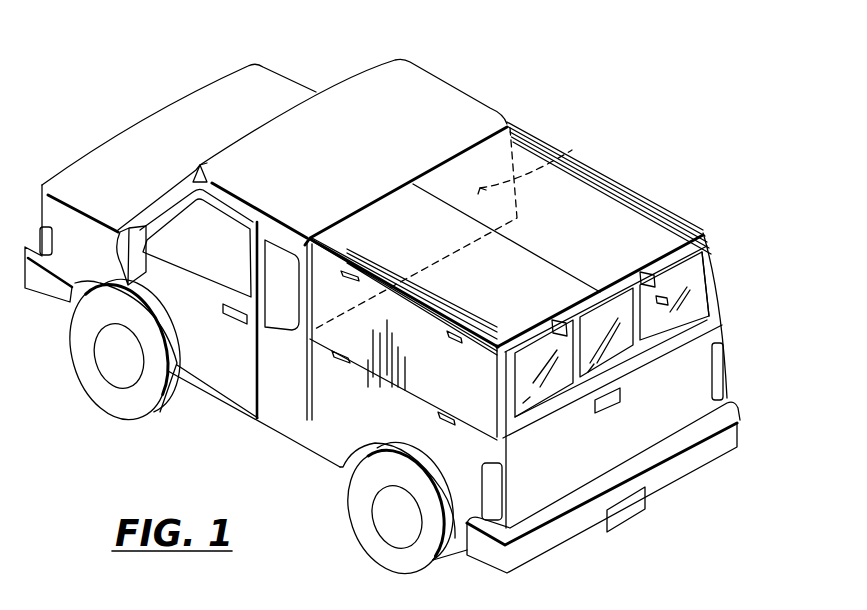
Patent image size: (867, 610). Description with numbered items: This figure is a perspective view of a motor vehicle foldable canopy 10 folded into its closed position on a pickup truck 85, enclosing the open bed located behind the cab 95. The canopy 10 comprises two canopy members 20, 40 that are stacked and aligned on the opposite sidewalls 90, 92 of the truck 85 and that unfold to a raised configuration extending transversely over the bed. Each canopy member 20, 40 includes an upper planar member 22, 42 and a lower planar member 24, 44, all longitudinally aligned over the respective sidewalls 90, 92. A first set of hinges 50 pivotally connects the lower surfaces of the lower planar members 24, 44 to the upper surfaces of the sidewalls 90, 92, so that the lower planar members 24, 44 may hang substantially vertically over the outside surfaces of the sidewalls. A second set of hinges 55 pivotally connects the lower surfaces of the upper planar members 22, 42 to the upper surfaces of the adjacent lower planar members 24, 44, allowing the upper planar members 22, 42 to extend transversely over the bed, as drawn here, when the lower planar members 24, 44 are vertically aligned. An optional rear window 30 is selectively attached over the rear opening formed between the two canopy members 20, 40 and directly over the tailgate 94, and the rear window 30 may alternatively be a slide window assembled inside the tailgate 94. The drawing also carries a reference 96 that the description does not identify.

The canopy 10 is at (661, 154).
The canopy member 20 is at (540, 403).
The upper planar member 22 is at (406, 206).
The lower planar member 24 is at (342, 333).
The rear window 30 is at (608, 347).
The canopy member 40 is at (701, 263).
The upper planar member 42 is at (486, 151).
The lower planar member 44 is at (703, 282).
The first set of hinges 50 is at (337, 360).
The second set of hinges 55 is at (343, 275).
The pickup truck 85 is at (353, 75).
The sidewall 90 is at (340, 455).
The sidewall 92 is at (655, 332).
The tailgate 94 is at (682, 393).
The cab 95 is at (255, 127).
The side rail 96 is at (571, 147).